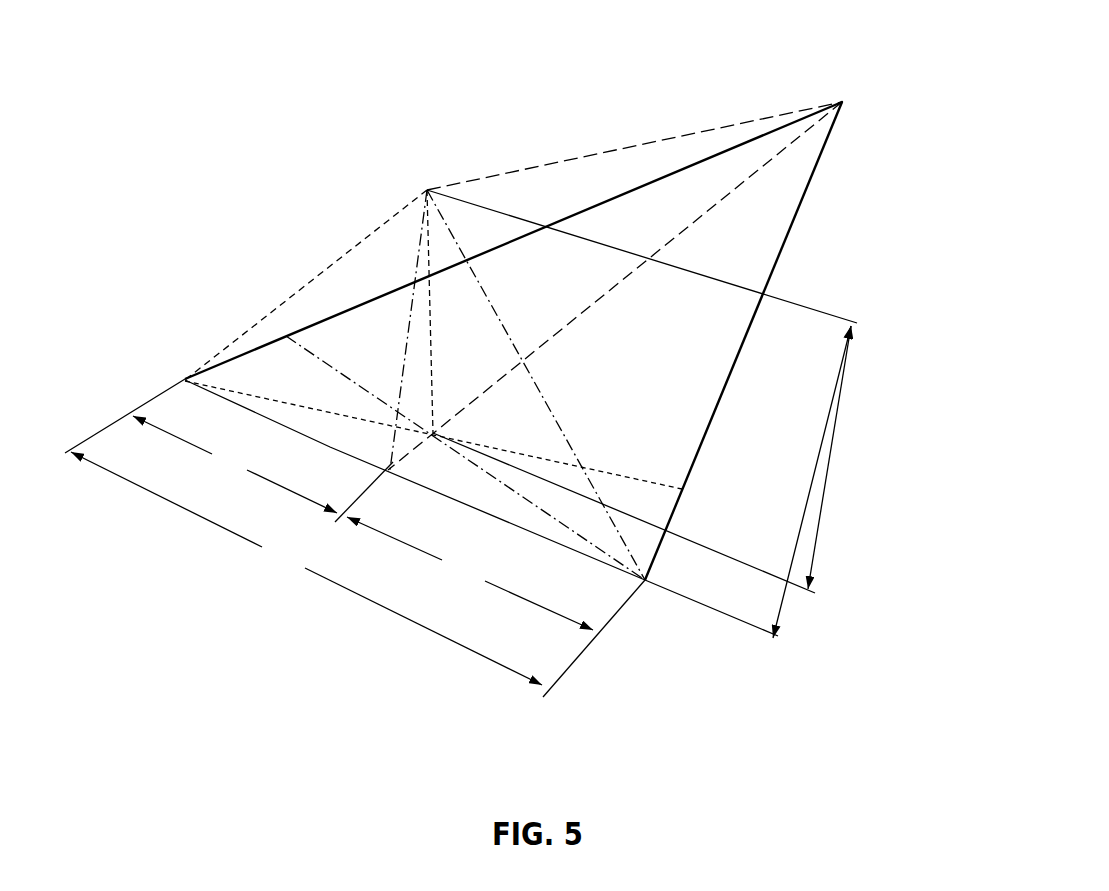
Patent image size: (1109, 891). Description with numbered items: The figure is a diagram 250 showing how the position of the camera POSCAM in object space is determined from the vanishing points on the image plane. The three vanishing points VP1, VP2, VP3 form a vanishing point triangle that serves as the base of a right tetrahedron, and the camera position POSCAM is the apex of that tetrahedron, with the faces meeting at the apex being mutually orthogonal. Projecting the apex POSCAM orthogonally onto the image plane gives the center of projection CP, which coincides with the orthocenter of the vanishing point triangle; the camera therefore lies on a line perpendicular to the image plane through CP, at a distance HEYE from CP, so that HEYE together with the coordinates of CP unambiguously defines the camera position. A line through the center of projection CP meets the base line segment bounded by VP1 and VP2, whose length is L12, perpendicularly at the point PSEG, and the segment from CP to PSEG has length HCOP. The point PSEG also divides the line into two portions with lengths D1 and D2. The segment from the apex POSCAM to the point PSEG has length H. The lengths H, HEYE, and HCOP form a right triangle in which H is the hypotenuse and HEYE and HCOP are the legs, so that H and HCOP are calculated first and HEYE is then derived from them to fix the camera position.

The diagram 250 is at (488, 93).
The vanishing point VP1 is at (612, 638).
The vanishing point VP2 is at (125, 401).
The vanishing point VP3 is at (867, 98).
The position of the camera POSCAM is at (521, 341).
The center of projection CP is at (438, 434).
The length of line segment CP PSEG HCOP is at (405, 460).
The point PSEG is at (388, 478).
The length of segment D1 is at (235, 464).
The length of segment D2 is at (470, 573).
The length of line segment VP1VP2 L12 is at (306, 568).
The length of line segment POSCAM PSEG H is at (803, 520).
The distance from center of projection to camera HEYE is at (823, 494).